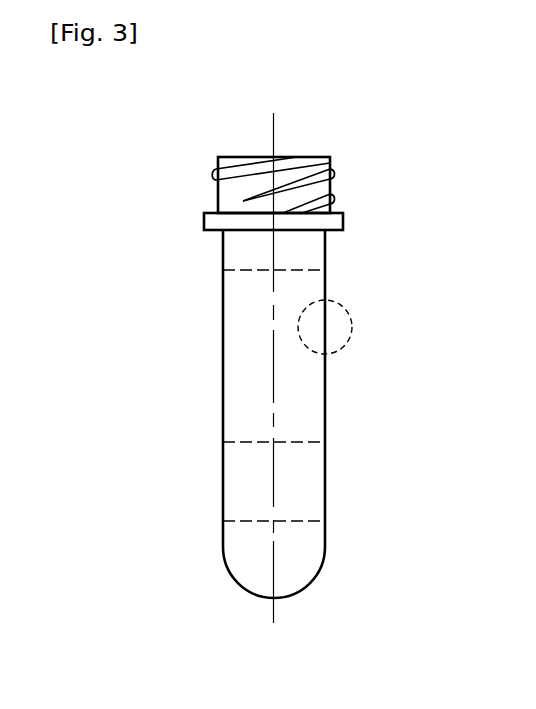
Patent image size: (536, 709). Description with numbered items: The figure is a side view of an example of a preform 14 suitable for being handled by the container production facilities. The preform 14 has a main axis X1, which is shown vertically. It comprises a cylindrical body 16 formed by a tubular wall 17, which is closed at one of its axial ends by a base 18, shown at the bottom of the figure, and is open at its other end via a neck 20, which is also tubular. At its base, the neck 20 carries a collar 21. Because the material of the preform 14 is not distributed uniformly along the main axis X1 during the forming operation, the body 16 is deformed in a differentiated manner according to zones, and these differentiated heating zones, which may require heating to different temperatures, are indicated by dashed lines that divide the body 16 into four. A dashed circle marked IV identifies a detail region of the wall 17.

The preform 14 is at (143, 296).
The cylindrical body 16 is at (277, 420).
The tubular wall 17 is at (328, 475).
The base 18 is at (288, 597).
The neck 20 is at (217, 192).
The collar 21 is at (339, 213).
The main axis X1 is at (274, 137).
The detail region of FIG. 4 IV is at (345, 305).